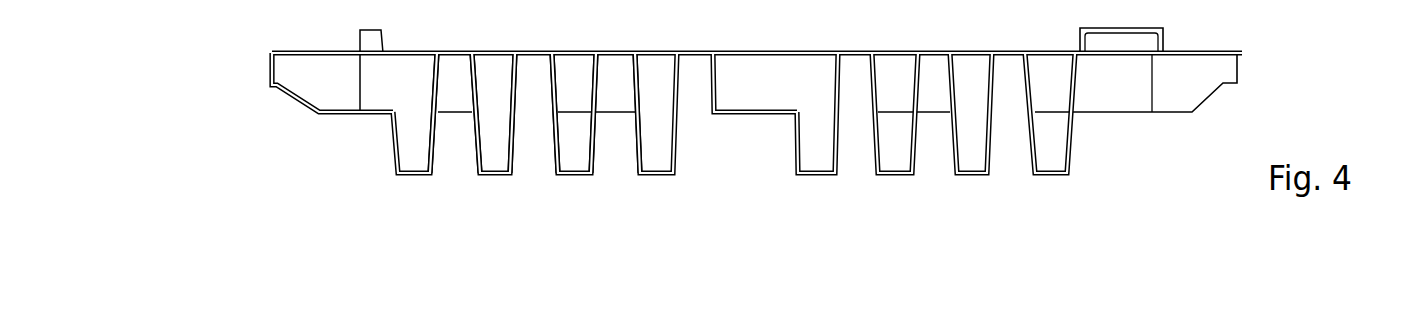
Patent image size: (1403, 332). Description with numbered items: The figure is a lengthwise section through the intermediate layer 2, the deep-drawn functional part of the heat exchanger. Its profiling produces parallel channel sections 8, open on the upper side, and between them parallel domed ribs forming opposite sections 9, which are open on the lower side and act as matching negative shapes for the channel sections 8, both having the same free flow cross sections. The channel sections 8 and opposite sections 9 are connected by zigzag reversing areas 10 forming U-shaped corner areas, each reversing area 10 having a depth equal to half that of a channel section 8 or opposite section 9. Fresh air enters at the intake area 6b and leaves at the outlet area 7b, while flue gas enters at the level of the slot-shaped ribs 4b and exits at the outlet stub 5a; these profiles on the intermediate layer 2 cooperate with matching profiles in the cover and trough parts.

The intermediate layer 2 is at (1174, 157).
The slot-shaped ribs 4b is at (383, 40).
The outlet stub 5a is at (1165, 36).
The intake area 6b is at (1237, 84).
The outlet area 7b is at (306, 83).
The channel sections 8 is at (489, 157).
The opposite sections 9 is at (448, 150).
The reversing areas 10 is at (753, 114).